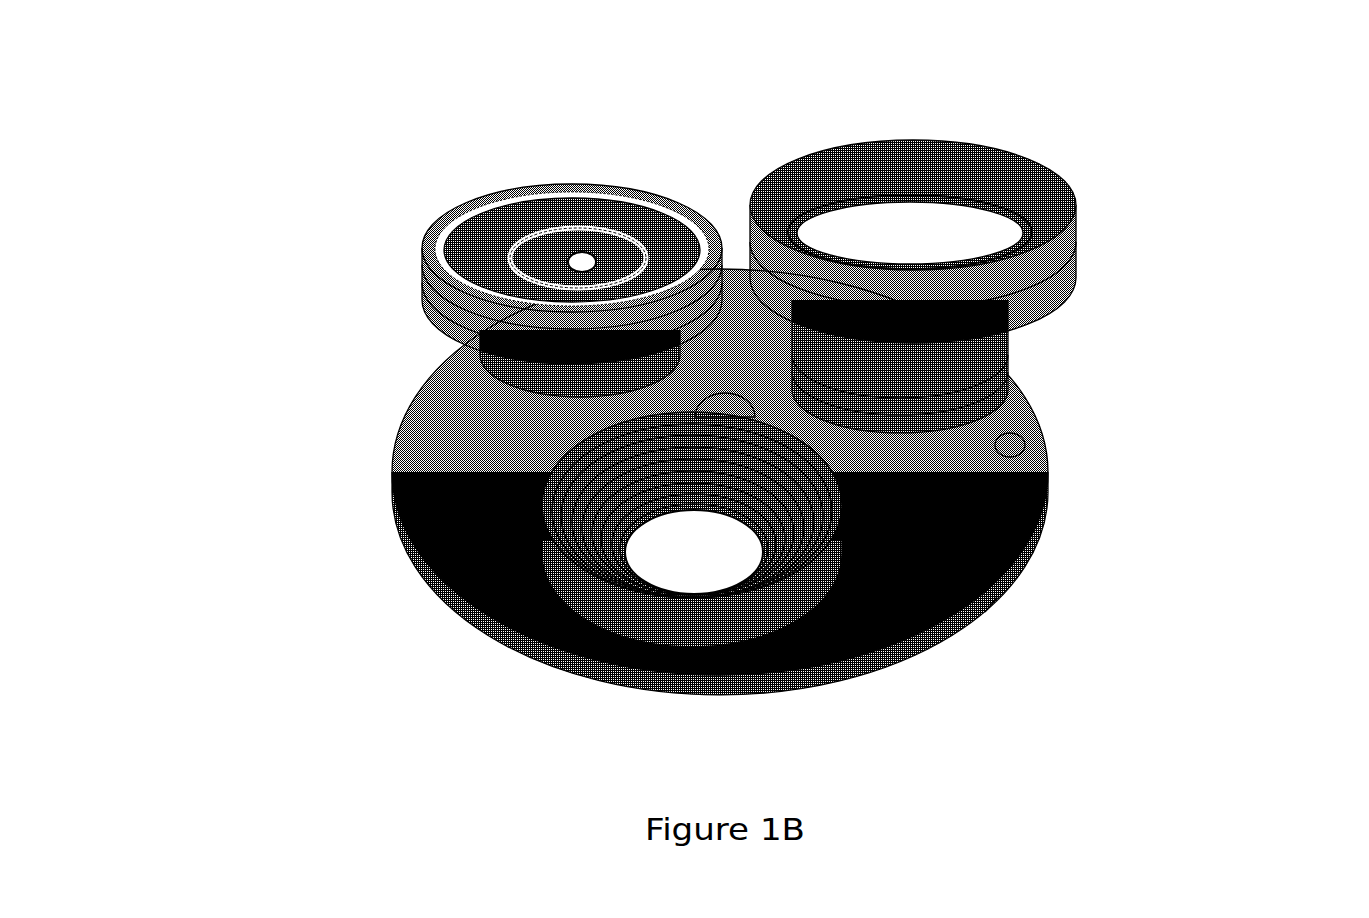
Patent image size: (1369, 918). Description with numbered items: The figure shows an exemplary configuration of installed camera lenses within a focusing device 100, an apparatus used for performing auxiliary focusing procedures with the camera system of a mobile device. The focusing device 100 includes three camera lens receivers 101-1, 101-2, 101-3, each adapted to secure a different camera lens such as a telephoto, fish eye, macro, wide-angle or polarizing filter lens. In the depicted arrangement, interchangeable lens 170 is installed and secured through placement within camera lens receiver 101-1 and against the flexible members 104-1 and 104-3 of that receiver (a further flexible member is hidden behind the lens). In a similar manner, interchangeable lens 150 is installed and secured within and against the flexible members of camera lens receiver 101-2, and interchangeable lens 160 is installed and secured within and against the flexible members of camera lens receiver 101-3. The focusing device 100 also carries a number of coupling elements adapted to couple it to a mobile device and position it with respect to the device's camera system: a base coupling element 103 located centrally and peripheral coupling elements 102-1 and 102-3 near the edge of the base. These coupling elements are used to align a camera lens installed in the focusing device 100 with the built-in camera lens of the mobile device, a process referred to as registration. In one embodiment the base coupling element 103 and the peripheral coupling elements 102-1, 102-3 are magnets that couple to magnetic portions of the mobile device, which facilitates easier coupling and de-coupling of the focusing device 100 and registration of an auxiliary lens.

The focusing device 100 is at (460, 455).
The camera lens receiver 101-1 is at (800, 552).
The camera lens receiver 101-2 is at (455, 360).
The camera lens receiver 101-3 is at (1020, 383).
The peripheral coupling element 102-1 is at (493, 557).
The peripheral coupling element 102-3 is at (1022, 452).
The base coupling element 103 is at (745, 394).
The flexible member 104-1 is at (592, 622).
The flexible member 104-3 is at (773, 623).
The interchangeable lens 150 is at (583, 245).
The interchangeable lens 160 is at (945, 225).
The interchangeable lens 170 is at (997, 597).